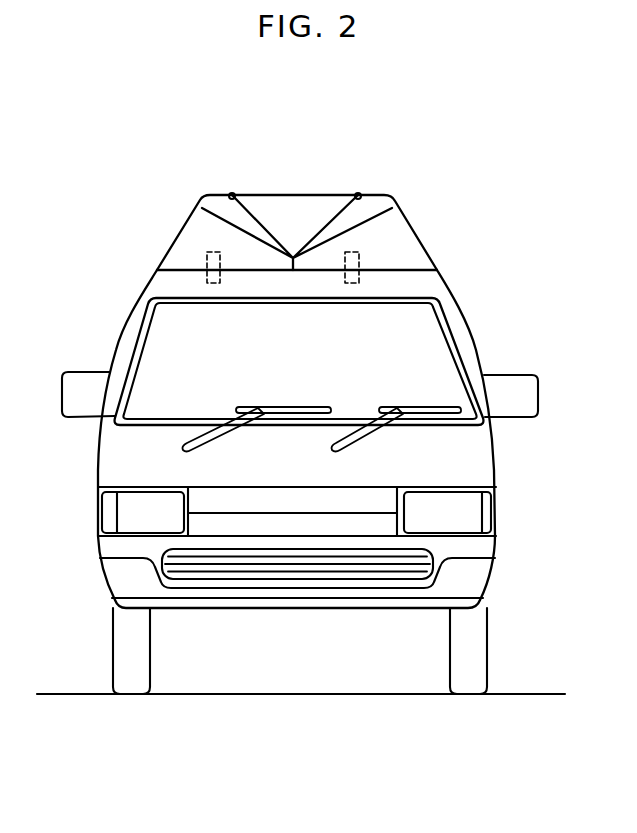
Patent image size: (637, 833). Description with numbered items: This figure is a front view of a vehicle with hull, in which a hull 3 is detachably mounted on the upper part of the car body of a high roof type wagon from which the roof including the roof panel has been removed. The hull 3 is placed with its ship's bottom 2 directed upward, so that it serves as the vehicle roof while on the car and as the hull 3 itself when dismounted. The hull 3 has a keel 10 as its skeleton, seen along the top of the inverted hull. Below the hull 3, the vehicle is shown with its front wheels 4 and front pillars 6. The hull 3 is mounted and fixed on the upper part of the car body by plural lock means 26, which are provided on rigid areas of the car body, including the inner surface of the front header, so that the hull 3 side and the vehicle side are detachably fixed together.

The ship's bottom 2 is at (293, 193).
The hull 3 is at (420, 238).
The front wheels 4 is at (122, 649).
The front pillar 6 is at (122, 337).
The keel 10 is at (232, 192).
The lock means 26 is at (209, 284).